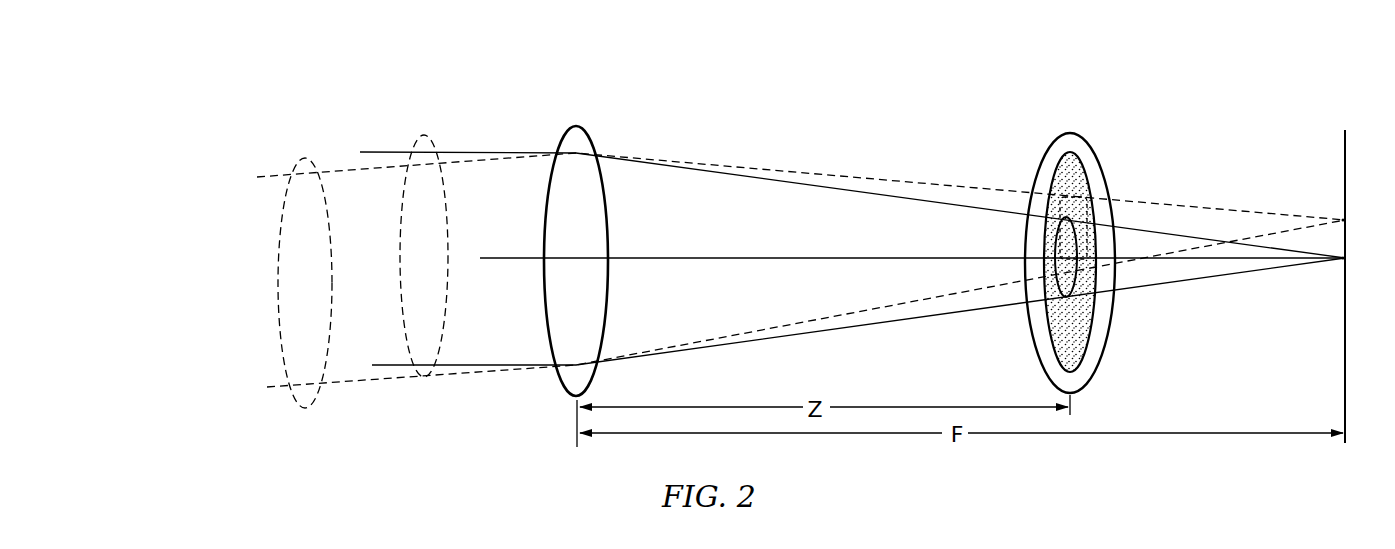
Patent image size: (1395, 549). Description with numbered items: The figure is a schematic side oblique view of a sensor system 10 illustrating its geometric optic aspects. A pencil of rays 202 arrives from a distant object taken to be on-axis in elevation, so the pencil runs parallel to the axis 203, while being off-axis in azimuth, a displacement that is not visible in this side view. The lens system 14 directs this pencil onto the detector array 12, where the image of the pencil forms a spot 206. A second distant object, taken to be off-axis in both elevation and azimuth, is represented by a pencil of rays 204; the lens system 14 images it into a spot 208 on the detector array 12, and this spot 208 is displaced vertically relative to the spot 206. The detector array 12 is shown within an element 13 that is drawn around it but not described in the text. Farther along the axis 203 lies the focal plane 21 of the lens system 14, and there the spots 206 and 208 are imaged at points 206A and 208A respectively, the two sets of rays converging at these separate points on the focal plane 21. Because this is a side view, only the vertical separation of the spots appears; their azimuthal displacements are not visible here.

The sensor system 10 is at (1314, 62).
The detector array 12 is at (1090, 338).
The lens mount / aperture 13 is at (1048, 146).
The lens system 14 is at (578, 127).
The focal plane 21 is at (1342, 142).
The pencil of rays 202 is at (420, 137).
The axis 203 is at (523, 260).
The pencil of rays 204 is at (296, 160).
The spot 206 is at (1082, 284).
The point 206A is at (1343, 262).
The spot 208 is at (1075, 210).
The point 208A is at (1343, 218).